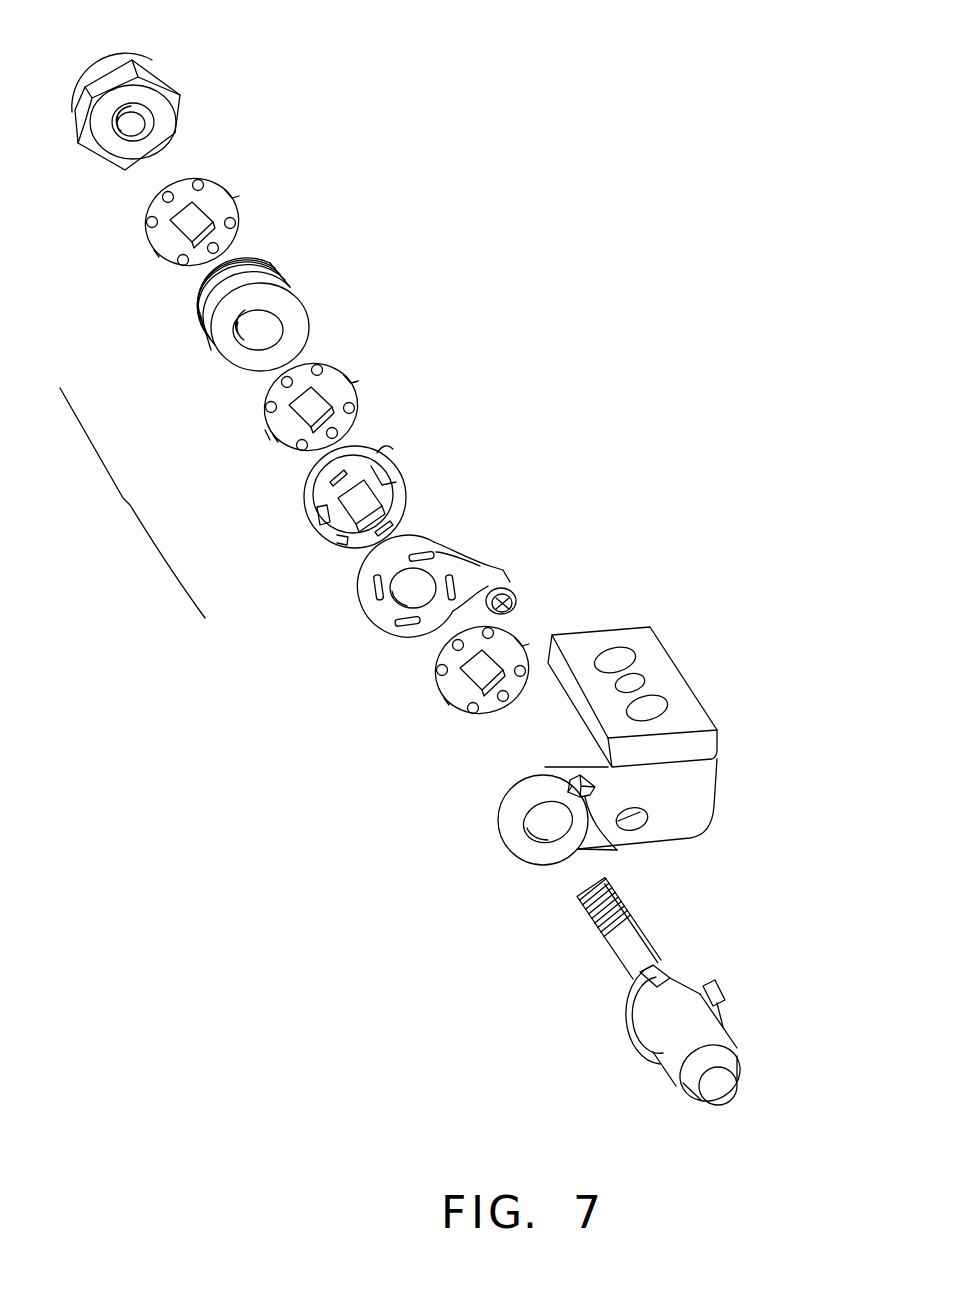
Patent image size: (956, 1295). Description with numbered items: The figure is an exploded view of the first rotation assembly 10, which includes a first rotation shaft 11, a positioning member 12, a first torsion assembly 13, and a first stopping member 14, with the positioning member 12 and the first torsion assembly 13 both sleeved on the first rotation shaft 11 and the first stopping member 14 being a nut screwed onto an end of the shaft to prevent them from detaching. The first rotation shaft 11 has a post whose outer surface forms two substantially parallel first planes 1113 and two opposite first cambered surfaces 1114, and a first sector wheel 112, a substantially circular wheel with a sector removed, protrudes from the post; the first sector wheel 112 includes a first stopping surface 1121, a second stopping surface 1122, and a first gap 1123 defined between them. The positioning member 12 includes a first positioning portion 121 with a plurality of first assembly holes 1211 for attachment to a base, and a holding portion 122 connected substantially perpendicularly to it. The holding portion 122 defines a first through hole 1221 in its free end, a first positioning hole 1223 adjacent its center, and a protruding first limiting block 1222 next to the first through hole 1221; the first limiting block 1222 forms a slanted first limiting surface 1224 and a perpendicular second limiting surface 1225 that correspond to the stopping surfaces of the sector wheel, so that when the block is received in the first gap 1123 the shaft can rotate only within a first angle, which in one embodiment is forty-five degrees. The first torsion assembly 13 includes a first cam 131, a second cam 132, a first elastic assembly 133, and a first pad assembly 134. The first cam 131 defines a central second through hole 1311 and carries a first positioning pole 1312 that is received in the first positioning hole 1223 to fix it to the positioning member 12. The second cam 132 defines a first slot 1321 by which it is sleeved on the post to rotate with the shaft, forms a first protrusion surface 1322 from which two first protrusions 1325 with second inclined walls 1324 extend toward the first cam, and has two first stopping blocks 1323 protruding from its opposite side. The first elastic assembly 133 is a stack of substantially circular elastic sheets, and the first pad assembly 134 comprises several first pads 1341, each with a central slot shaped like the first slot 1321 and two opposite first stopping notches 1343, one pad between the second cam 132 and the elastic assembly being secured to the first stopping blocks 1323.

The first rotation assembly 10 is at (565, 238).
The first rotation shaft 11 is at (593, 971).
The first sector wheel 112 is at (622, 1014).
The first planes 1113 is at (640, 928).
The first cambered surfaces 1114 is at (617, 942).
The first stopping surface 1121 is at (712, 986).
The second stopping surface 1122 is at (660, 969).
The first gap 1123 is at (715, 1007).
The positioning member 12 is at (722, 694).
The first positioning portion 121 is at (672, 650).
The first assembly holes 1211 is at (612, 656).
The holding portion 122 is at (718, 797).
The first through hole 1221 is at (548, 826).
The first limiting block 1222 is at (576, 782).
The first positioning hole 1223 is at (645, 822).
The first limiting surface 1224 is at (617, 850).
The second limiting surface 1225 is at (568, 795).
The first torsion assembly 13 is at (132, 503).
The first cam 131 is at (343, 582).
The second through hole 1311 is at (410, 598).
The first positioning pole 1312 is at (505, 598).
The second cam 132 is at (300, 537).
The first slot 1321 is at (350, 498).
The first protrusion surface 1322 is at (398, 510).
The first stopping blocks 1323 is at (390, 449).
The second inclined walls 1324 is at (372, 467).
The first protrusions 1325 is at (388, 482).
The first elastic assembly 133 is at (232, 352).
The first pad assembly 134 is at (258, 436).
The first pad 1341 is at (226, 207).
The first stopping notches 1343 is at (368, 388).
The first stopping member 14 is at (150, 76).